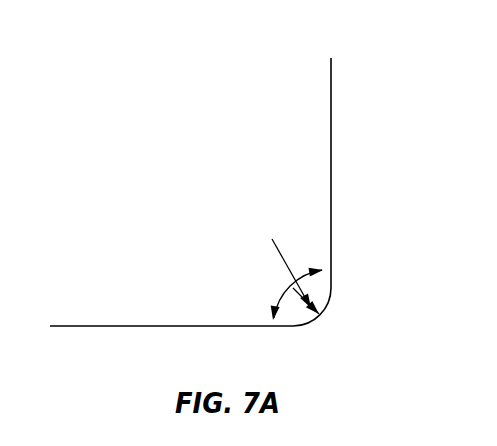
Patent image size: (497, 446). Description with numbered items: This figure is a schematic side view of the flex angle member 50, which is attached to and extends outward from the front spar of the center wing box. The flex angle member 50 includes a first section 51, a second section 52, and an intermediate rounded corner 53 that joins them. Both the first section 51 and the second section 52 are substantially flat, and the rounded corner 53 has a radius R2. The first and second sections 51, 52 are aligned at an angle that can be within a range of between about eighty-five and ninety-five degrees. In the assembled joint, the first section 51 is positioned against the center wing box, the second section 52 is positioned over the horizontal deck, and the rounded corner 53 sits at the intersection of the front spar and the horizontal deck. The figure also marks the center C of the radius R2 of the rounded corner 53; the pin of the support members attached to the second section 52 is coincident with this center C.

The flex angle member 50 is at (229, 188).
The first section 51 is at (331, 190).
The second section 52 is at (128, 326).
The rounded corner 53 is at (322, 308).
The radius R2 is at (325, 272).
The center C is at (292, 285).